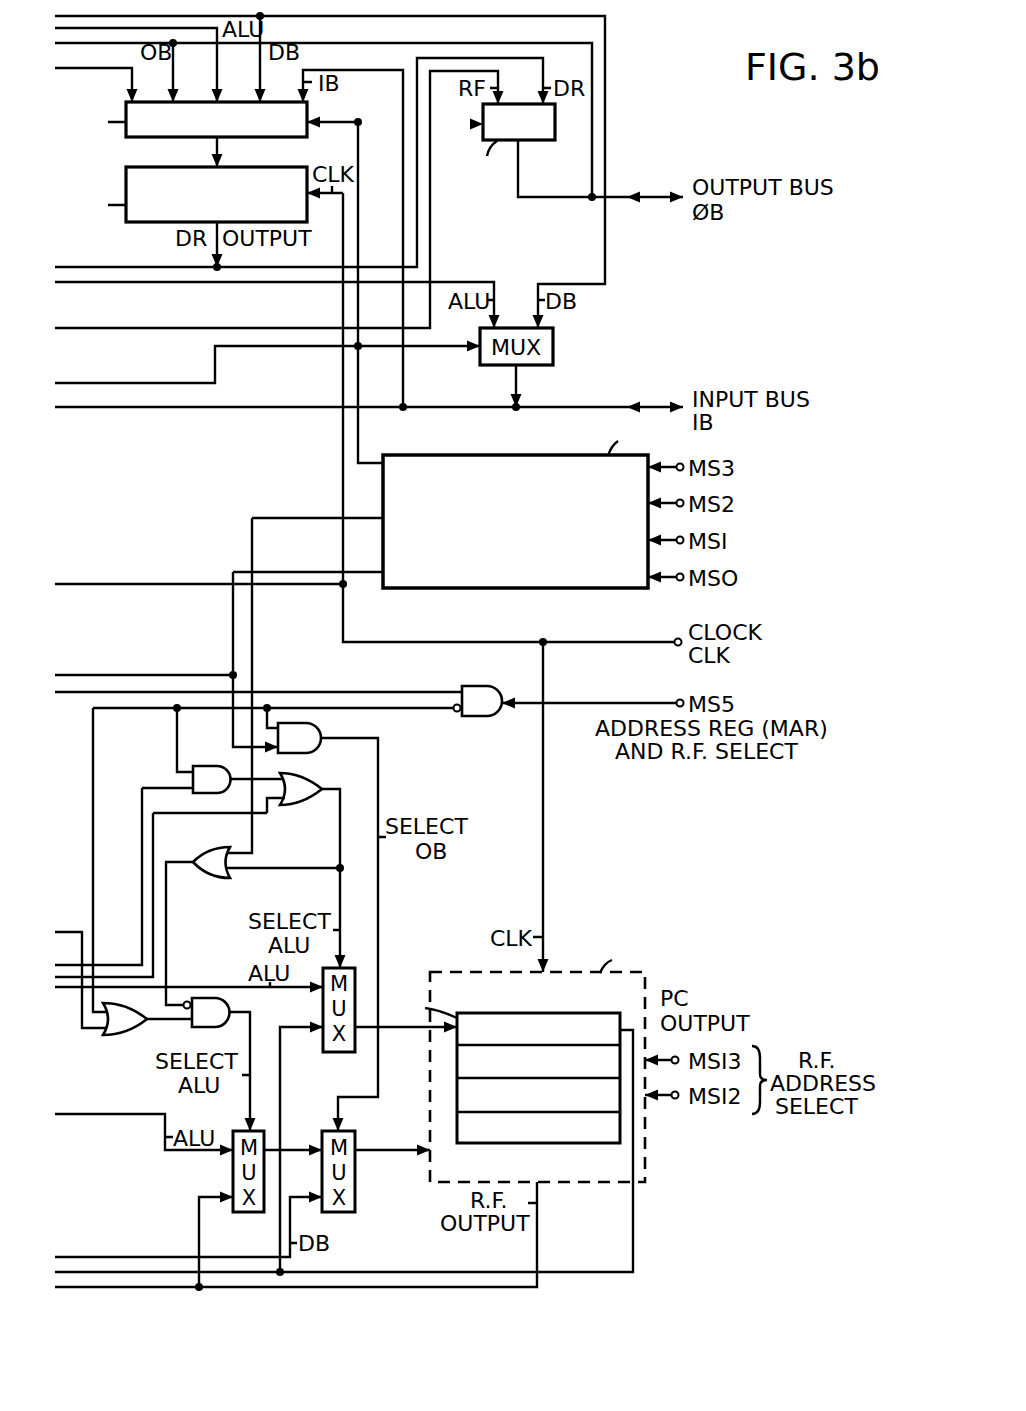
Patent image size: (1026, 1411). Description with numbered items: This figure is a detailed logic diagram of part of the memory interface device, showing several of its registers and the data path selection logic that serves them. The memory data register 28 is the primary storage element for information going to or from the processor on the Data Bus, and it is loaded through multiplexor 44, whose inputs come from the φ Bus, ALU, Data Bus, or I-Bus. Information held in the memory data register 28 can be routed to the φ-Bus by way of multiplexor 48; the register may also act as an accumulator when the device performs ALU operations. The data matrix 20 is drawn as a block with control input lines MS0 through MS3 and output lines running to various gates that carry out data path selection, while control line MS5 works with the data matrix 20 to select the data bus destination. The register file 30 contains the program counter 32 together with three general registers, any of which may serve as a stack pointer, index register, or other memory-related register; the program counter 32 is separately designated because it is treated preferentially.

The multiplexor 44 is at (196, 119).
The memory data register 28 is at (196, 194).
The multiplexor 48 is at (510, 139).
The data matrix 20 is at (515, 507).
The register file 30 is at (521, 1061).
The program counter 32 is at (508, 1067).